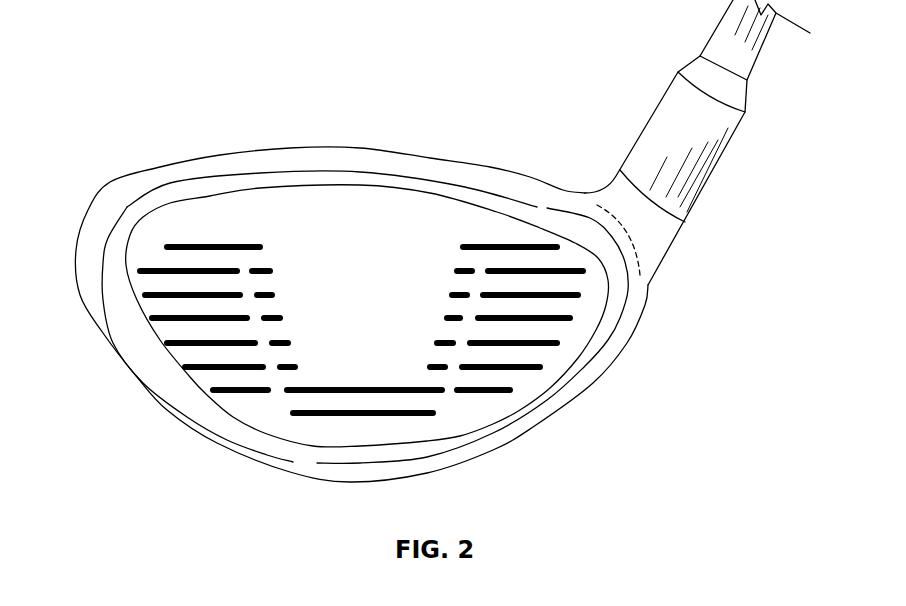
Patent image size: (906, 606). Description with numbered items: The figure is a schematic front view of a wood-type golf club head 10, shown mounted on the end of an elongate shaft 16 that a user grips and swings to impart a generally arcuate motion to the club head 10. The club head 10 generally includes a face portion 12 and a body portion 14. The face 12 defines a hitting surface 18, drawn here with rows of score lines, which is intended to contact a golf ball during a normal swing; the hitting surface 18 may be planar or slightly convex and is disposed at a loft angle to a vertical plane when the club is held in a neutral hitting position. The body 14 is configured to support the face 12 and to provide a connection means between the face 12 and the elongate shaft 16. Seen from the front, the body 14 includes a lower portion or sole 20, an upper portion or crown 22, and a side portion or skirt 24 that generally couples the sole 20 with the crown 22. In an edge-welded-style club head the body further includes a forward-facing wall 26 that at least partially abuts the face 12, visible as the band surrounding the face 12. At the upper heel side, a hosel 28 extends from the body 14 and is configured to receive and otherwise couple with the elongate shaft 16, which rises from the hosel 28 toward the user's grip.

The club head 10 is at (140, 90).
The face portion 12 is at (205, 381).
The body portion 14 is at (396, 143).
The elongate shaft 16 is at (758, 60).
The hitting surface 18 is at (378, 344).
The sole 20 is at (505, 451).
The crown 22 is at (313, 158).
The skirt 24 is at (110, 329).
The forward-facing wall 26 is at (246, 192).
The hosel 28 is at (603, 178).